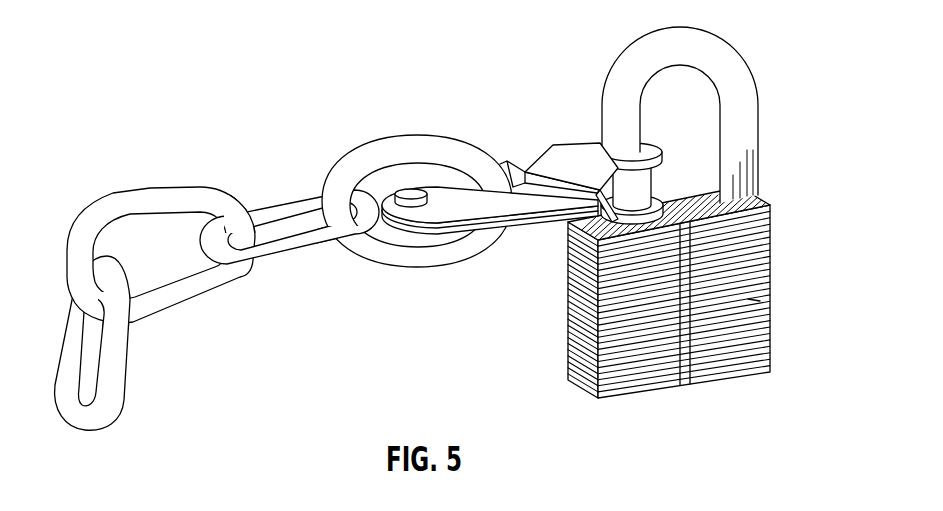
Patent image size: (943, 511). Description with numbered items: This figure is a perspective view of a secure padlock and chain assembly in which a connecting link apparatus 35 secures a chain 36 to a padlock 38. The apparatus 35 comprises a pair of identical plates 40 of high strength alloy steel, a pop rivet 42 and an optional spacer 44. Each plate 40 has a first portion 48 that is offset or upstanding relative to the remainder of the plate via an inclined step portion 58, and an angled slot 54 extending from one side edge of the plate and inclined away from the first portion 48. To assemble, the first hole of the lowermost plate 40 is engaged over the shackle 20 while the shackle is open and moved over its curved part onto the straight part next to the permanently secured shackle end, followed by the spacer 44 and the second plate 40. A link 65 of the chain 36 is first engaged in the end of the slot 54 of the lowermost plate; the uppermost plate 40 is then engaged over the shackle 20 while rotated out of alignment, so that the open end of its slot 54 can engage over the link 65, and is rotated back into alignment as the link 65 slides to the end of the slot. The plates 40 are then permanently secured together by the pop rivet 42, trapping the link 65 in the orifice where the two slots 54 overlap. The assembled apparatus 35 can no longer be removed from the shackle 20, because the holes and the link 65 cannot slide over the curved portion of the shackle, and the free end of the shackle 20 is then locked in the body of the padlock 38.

The shackle 20 is at (743, 89).
The connecting link apparatus 35 is at (491, 162).
The chain 36 is at (306, 247).
The padlock 38 is at (753, 303).
The plate 40 is at (449, 191).
The pop rivet 42 is at (412, 189).
The spacer 44 is at (643, 180).
The first portion 48 is at (654, 153).
The angled slot 54 is at (533, 164).
The step portion 58 is at (567, 166).
The link 65 is at (363, 163).